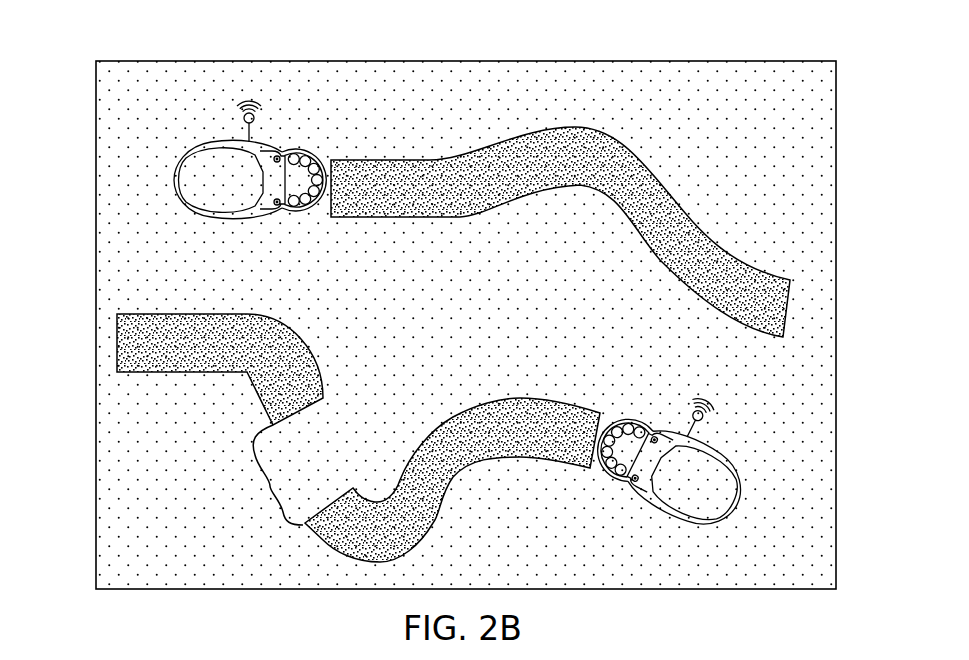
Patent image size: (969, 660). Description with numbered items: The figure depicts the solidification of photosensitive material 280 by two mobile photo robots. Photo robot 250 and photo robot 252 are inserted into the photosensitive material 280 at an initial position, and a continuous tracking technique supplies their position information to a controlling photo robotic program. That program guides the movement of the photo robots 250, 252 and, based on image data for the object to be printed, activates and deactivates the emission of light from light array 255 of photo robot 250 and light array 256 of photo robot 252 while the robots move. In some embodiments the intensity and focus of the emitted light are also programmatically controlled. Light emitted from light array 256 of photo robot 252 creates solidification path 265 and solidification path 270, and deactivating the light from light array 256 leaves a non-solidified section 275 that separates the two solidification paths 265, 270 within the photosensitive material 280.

The photo robot 250 is at (187, 160).
The photo robot 252 is at (737, 487).
The light array 255 is at (316, 153).
The light array 256 is at (625, 417).
The solidification path 265 is at (148, 360).
The solidification path 270 is at (548, 452).
The non-solidified section 275 is at (268, 486).
The photosensitive material 280 is at (157, 259).